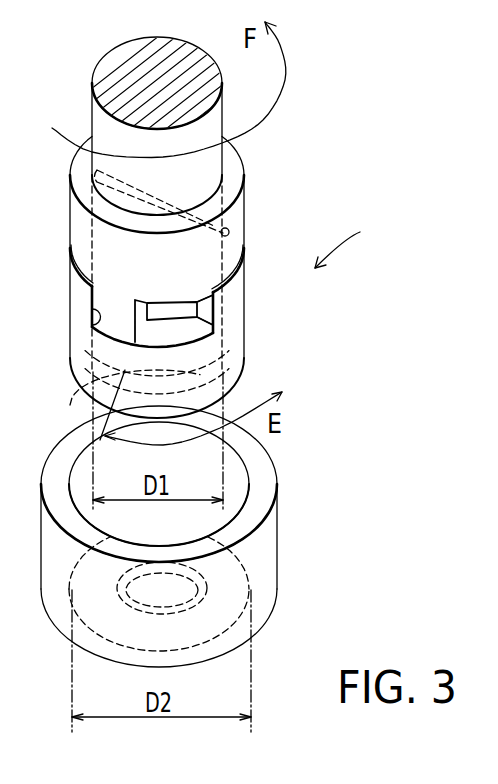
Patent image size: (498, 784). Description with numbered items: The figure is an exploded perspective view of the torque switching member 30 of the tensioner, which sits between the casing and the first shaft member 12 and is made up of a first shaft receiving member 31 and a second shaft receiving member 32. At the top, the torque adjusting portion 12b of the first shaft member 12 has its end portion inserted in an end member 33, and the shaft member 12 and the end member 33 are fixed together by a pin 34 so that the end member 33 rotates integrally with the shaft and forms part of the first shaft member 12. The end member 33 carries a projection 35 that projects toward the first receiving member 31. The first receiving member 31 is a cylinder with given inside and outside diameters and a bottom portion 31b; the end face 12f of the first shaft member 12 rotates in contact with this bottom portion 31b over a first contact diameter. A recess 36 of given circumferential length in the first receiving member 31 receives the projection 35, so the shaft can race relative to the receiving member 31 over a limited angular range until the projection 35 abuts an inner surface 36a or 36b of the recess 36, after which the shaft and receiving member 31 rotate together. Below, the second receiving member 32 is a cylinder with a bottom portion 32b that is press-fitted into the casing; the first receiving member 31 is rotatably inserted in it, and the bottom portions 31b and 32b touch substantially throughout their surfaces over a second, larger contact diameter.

The first shaft member 12 is at (117, 68).
The torque adjusting portion 12b is at (100, 122).
The end face 12f is at (107, 404).
The torque switching member 30 is at (352, 239).
The first shaft receiving member 31 is at (248, 358).
The bottom portion 31b is at (250, 342).
The second shaft receiving member 32 is at (267, 580).
The bottom portion 32b is at (262, 545).
The end member 33 is at (238, 208).
The pin 34 is at (230, 232).
The projection 35 is at (107, 308).
The recess 36 is at (165, 335).
The inner surface 36a is at (103, 330).
The inner surface 36b is at (205, 306).